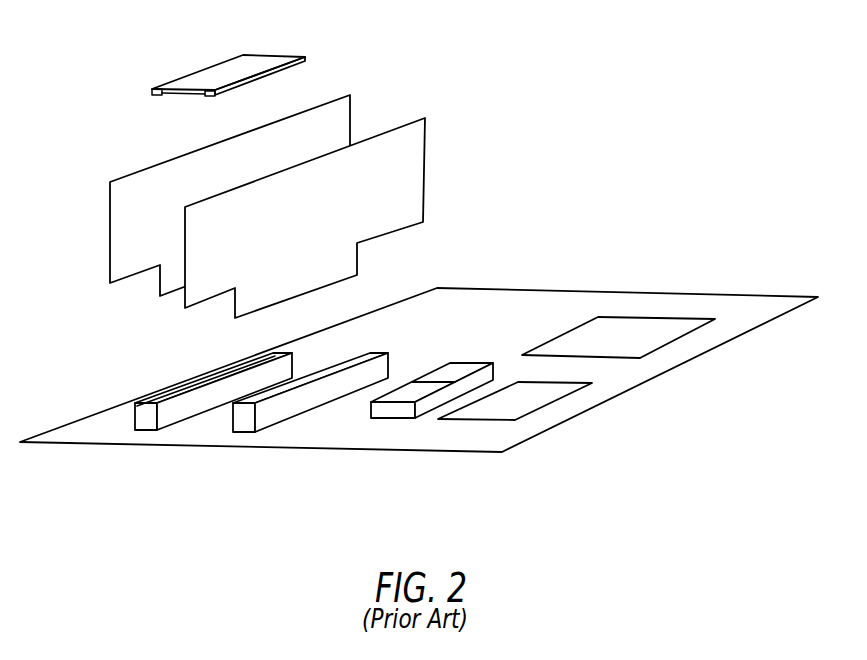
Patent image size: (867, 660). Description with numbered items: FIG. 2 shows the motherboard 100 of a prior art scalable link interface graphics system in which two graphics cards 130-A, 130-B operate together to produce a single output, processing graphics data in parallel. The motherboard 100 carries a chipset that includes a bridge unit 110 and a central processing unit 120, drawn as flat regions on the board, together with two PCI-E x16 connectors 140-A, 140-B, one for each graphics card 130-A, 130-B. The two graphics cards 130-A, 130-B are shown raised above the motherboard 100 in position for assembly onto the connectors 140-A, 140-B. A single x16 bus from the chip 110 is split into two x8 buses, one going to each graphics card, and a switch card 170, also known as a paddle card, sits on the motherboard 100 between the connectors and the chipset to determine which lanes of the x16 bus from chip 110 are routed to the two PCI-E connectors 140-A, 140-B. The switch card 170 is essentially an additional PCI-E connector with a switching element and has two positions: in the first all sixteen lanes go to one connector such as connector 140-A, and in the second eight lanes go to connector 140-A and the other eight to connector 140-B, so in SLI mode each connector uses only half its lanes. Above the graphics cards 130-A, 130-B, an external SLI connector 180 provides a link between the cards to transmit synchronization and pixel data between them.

The motherboard 100 is at (419, 370).
The bridge unit 110 is at (534, 416).
The central processing unit 120 is at (642, 347).
The graphics card 130-A is at (331, 193).
The graphics card 130-B is at (282, 160).
The PCI-E x16 connector 140-A is at (261, 416).
The PCI-E x16 connector 140-B is at (163, 416).
The switch card 170 is at (405, 422).
The external SLI connector 180 is at (257, 55).